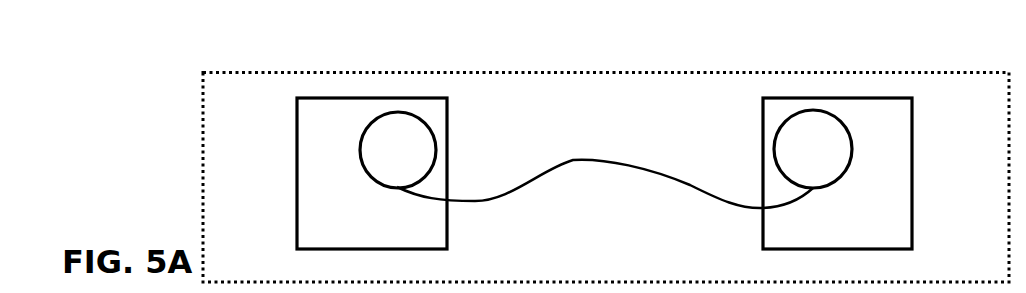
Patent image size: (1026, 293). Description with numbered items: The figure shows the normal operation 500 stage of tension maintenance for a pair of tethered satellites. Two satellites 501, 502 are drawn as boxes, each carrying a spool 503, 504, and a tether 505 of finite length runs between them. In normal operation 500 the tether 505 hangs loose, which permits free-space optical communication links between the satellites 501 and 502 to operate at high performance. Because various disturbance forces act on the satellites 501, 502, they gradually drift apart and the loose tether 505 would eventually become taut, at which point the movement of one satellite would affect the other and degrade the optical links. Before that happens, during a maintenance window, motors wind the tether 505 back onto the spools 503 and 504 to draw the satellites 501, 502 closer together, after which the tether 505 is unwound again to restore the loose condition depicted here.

The normal operation 500 is at (606, 178).
The satellite 501 is at (368, 97).
The satellite 502 is at (837, 97).
The spool 503 is at (353, 162).
The spool 504 is at (853, 167).
The tether 505 is at (580, 168).